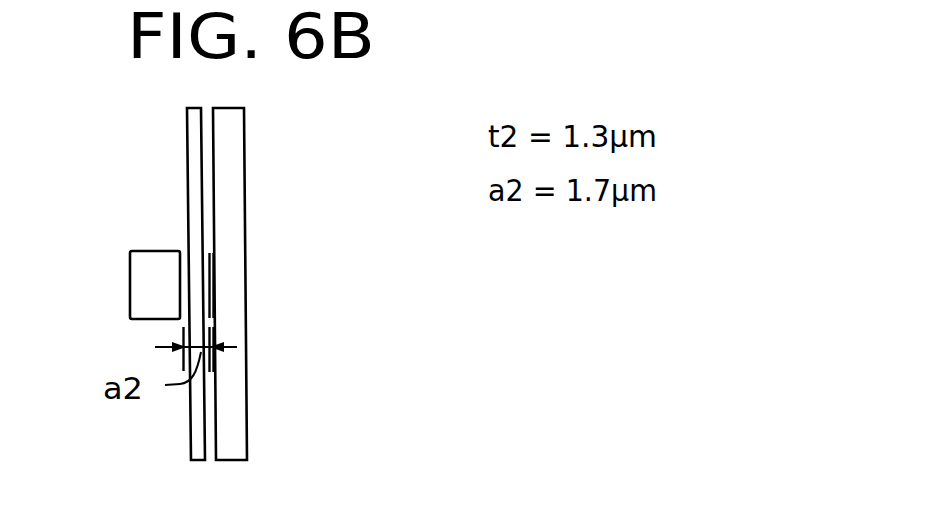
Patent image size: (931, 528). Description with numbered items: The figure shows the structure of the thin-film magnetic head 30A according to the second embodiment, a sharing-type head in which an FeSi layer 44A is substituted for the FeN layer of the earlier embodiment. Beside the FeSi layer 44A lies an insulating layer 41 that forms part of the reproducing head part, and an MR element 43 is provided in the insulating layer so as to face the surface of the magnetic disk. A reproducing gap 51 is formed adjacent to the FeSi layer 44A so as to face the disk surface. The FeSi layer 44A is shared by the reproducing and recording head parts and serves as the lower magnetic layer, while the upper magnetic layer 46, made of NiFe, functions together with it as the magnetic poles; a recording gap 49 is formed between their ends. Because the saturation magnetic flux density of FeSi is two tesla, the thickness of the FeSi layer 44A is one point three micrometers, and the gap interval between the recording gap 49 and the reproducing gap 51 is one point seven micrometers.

The thin-film magnetic head 30A is at (388, 135).
The insulating layer 41 is at (245, 372).
The MR element 43 is at (212, 282).
The FeSi layer 44A is at (197, 447).
The upper magnetic layer 46 is at (140, 283).
The recording gap 49 is at (184, 262).
The reproducing gap 51 is at (214, 262).